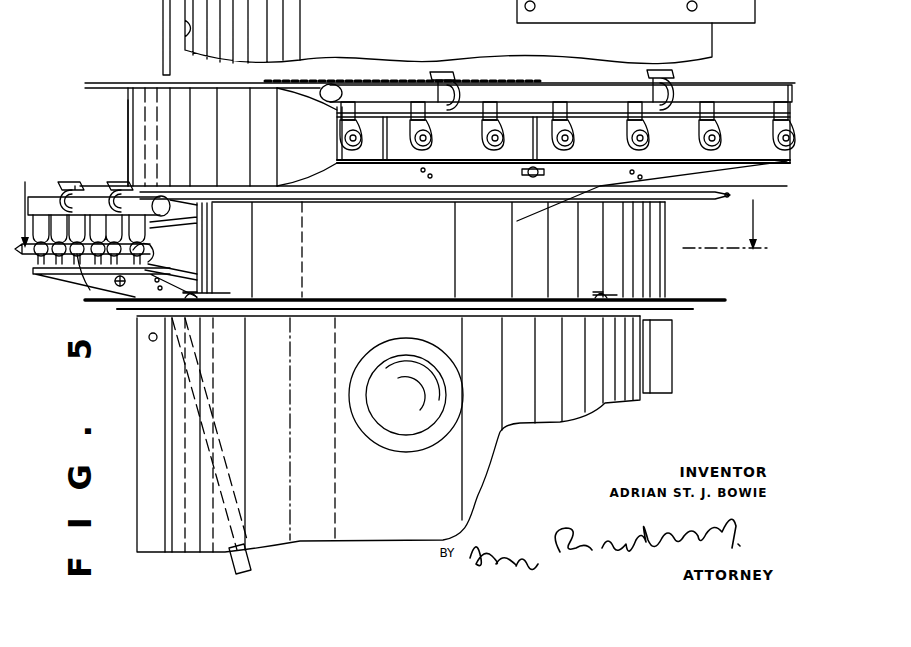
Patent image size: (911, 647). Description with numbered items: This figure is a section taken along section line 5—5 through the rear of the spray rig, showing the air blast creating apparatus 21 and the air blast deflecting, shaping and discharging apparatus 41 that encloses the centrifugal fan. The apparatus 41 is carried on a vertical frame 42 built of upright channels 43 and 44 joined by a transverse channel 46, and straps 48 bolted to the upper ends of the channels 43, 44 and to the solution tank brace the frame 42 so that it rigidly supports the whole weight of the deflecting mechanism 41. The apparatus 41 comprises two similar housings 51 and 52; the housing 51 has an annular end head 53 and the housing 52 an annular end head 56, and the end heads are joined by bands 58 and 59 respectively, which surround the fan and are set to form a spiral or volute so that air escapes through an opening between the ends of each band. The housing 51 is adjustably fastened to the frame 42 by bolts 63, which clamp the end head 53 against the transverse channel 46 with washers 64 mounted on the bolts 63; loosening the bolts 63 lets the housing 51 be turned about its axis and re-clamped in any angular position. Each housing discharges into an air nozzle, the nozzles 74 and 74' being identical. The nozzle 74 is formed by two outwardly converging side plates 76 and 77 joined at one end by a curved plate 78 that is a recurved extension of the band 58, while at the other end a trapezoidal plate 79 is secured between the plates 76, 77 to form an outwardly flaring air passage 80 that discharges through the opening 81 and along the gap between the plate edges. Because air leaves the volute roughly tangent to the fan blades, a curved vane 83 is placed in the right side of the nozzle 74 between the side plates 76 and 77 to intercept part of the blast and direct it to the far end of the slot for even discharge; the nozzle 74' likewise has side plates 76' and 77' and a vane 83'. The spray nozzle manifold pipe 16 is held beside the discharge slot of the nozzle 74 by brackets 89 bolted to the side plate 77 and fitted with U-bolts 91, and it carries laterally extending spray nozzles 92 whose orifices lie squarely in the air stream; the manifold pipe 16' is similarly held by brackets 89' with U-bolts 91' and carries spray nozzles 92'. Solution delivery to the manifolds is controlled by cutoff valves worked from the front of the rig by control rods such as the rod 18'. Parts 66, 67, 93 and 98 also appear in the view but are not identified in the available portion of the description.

The section line 5 is at (394, 208).
The spray nozzle manifold pipe 16 is at (94, 180).
The spray nozzle manifold pipe 16' is at (556, 68).
The control rod 18' is at (213, 37).
The air blast creating apparatus 21 is at (766, 301).
The air blast deflecting, shaping and discharging apparatus 41 is at (338, 429).
The vertical frame 42 is at (441, 347).
The upright channel 43 is at (678, 362).
The upright channel 44 is at (140, 435).
The transverse channel 46 is at (438, 383).
The straps 48 is at (614, 410).
The housing 51 is at (675, 249).
The housing 52 is at (104, 143).
The annular end head 53 is at (442, 345).
The annular end head 56 is at (436, 58).
The band 58 is at (438, 249).
The band 59 is at (202, 137).
The bolts 63 is at (403, 303).
The washers 64 is at (393, 307).
The stud 66 is at (317, 249).
The nut 67 is at (340, 229).
The air nozzle 74 is at (375, 289).
The air nozzle 74' is at (654, 191).
The side plate 76 is at (135, 322).
The side plate 76' is at (435, 204).
The side plate 77 is at (192, 171).
The side plate 77' is at (563, 79).
The curved plate 78 is at (307, 137).
The trapezoidal plate 79 is at (197, 247).
The outwardly flaring air passage 80 is at (325, 196).
The opening 81 is at (195, 248).
The curved vane 83 is at (82, 301).
The curved vane 83' is at (387, 208).
The brackets 89 is at (95, 158).
The brackets 89' is at (567, 128).
The U-bolts 91 is at (81, 159).
The U-bolts 91' is at (552, 80).
The spray nozzles 92 is at (125, 287).
The spray nozzles 92' is at (443, 208).
The clamp 93 is at (561, 140).
The hose 98 is at (488, 51).